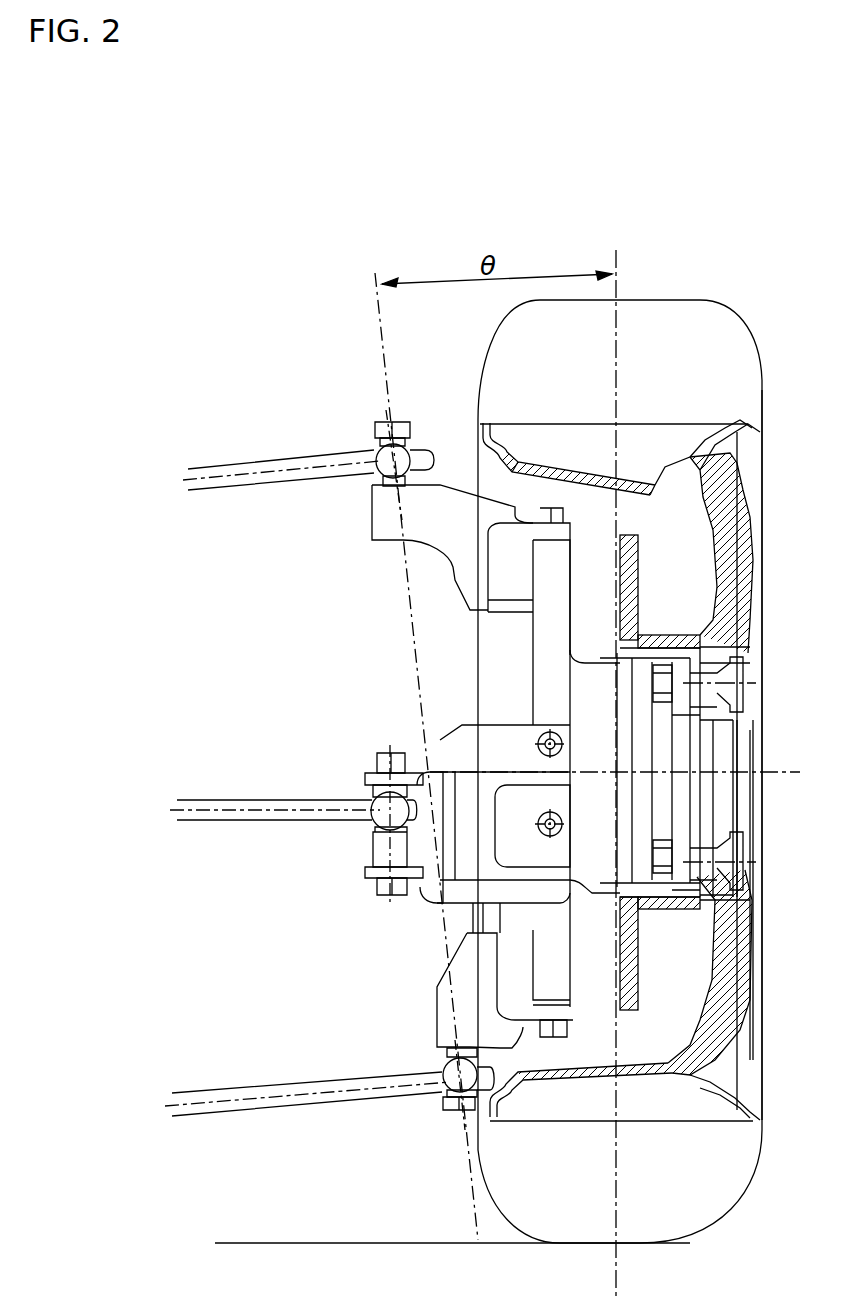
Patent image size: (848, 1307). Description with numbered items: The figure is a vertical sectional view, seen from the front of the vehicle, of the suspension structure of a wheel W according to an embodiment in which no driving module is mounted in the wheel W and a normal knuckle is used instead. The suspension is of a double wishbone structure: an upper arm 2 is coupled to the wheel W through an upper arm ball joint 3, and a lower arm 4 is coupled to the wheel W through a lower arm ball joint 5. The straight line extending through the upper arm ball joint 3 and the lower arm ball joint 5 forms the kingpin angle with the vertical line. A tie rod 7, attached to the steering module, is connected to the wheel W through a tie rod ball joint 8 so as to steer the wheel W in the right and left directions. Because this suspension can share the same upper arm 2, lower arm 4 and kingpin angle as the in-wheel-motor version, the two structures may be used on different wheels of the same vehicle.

The wheel W is at (690, 300).
The upper arm 2 is at (250, 468).
The upper arm ball joint 3 is at (383, 452).
The tie rod 7 is at (227, 805).
The tie rod ball joint 8 is at (378, 808).
The lower arm 4 is at (223, 1098).
The lower arm ball joint 5 is at (443, 1090).